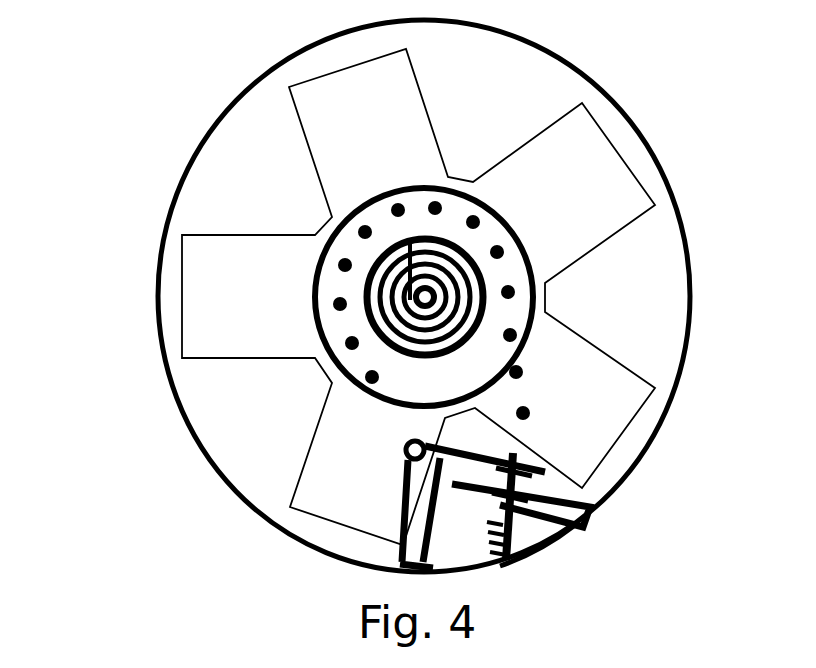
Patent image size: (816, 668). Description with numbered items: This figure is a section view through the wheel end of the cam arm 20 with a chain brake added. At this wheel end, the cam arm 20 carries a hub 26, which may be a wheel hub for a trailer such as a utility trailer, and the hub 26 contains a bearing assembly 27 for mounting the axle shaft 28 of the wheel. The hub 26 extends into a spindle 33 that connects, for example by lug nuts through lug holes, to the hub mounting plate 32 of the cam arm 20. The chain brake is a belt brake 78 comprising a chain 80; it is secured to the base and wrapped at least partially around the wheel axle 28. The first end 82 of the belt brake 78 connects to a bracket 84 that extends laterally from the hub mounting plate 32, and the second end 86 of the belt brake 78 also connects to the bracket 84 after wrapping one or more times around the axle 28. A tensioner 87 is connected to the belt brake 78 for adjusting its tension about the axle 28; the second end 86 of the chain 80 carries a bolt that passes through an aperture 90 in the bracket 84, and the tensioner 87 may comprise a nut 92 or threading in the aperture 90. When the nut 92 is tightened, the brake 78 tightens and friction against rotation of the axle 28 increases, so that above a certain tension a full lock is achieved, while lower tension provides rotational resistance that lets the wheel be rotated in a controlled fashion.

The cam arm 20 is at (157, 129).
The hub mounting plate 32 is at (593, 68).
The hub 26 is at (430, 117).
The spindle 33 is at (418, 297).
The bearing assembly 27 is at (360, 197).
The axle shaft 28 is at (508, 252).
The belt brake 78 is at (474, 220).
The chain 80 is at (473, 222).
The first end 82 is at (404, 450).
The bracket 84 is at (540, 478).
The second end 86 is at (549, 430).
The tensioner 87 is at (537, 555).
The aperture 90 is at (480, 462).
The nut 92 is at (515, 533).